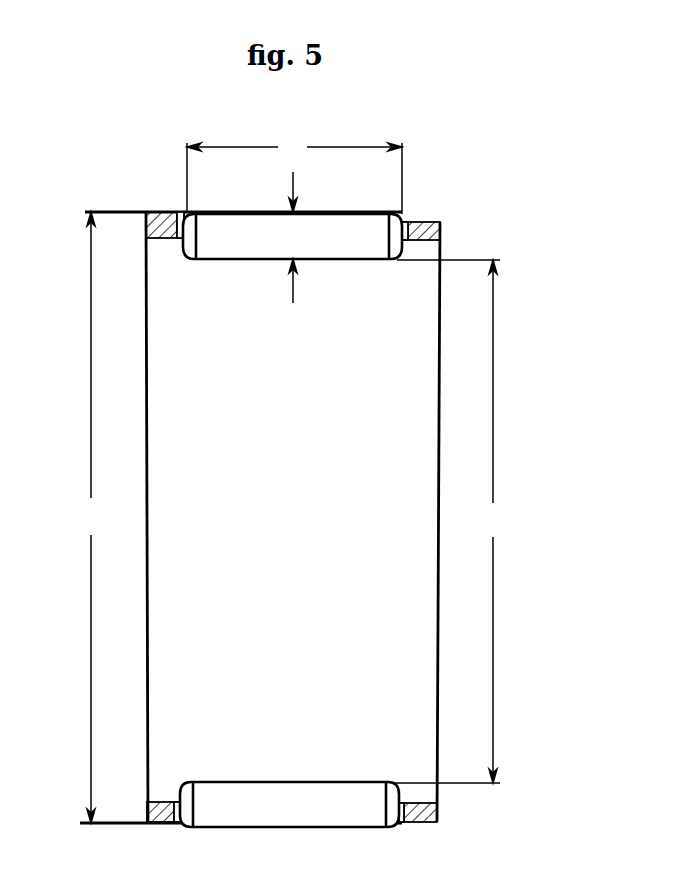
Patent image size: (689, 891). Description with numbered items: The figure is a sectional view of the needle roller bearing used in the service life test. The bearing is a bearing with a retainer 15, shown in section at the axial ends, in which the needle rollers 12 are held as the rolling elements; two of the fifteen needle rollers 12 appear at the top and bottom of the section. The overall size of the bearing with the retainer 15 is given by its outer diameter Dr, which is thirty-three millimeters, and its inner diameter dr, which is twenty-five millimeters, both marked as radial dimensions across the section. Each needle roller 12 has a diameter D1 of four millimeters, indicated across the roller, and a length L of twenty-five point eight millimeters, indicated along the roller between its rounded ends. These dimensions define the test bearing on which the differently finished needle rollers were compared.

The needle roller 12 is at (288, 793).
The retainer 15 is at (425, 222).
The outer diameter Dr is at (90, 517).
The inner diameter dr is at (450, 521).
The length L is at (294, 174).
The diameter D1 is at (299, 239).